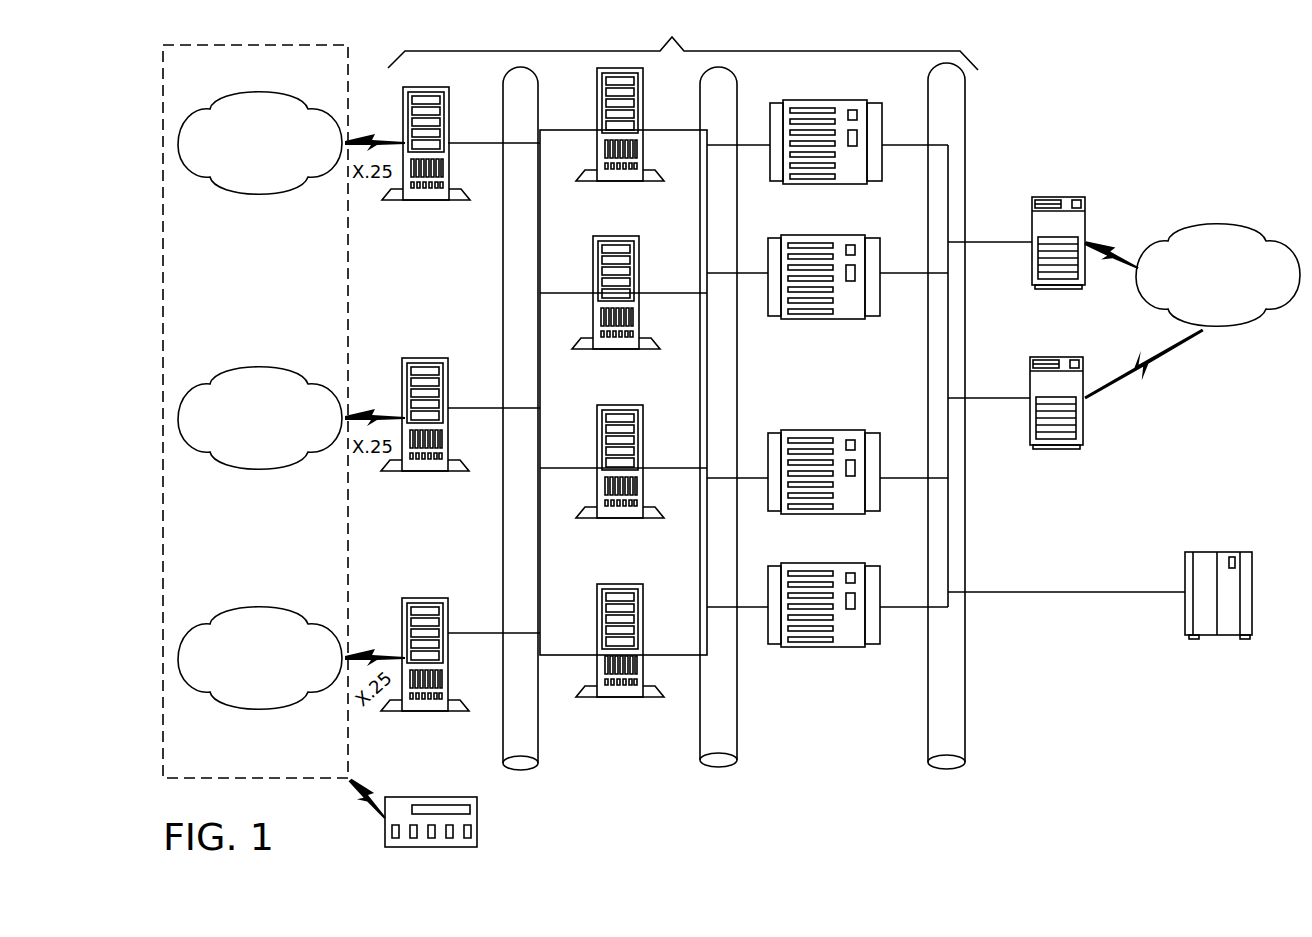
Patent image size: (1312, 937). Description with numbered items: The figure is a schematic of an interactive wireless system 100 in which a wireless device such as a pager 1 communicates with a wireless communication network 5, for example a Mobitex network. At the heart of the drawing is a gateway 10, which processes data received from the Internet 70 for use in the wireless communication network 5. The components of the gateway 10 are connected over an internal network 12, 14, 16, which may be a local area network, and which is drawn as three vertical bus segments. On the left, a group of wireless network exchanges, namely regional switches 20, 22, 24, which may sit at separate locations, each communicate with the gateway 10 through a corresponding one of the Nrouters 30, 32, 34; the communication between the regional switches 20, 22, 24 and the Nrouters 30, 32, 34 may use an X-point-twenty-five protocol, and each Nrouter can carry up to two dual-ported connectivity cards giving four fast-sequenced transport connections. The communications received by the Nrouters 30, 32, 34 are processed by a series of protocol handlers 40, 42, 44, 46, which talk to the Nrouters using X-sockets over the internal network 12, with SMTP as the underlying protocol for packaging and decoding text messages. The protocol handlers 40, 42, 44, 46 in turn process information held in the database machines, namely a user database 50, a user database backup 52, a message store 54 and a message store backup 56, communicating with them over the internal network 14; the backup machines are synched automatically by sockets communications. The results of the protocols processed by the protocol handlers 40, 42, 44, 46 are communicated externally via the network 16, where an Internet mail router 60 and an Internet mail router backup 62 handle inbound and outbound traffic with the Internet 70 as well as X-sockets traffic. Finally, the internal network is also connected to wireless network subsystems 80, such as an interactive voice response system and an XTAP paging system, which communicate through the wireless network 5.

The pager 1 is at (477, 820).
The wireless communication network 5 is at (257, 45).
The gateway 10 is at (683, 332).
The internal network 12 is at (538, 750).
The internal network 14 is at (737, 733).
The network 16 is at (965, 733).
The regional switch 20 is at (238, 197).
The regional switch 22 is at (238, 473).
The regional switch 24 is at (240, 712).
The Nrouter 30 is at (417, 85).
The Nrouter 32 is at (417, 356).
The Nrouter 34 is at (417, 596).
The protocol handler 40 is at (645, 117).
The protocol handler 42 is at (640, 272).
The protocol handler 44 is at (643, 450).
The protocol handler 46 is at (643, 610).
The user database 50 is at (837, 98).
The user database backup 52 is at (882, 262).
The message store 54 is at (830, 430).
The message store backup 56 is at (820, 563).
The Internet mail router 60 is at (1068, 197).
The Internet mail router backup 62 is at (1085, 375).
The Internet 70 is at (1245, 222).
The wireless network subsystems 80 is at (1233, 552).
The interactive wireless system 100 is at (1108, 113).